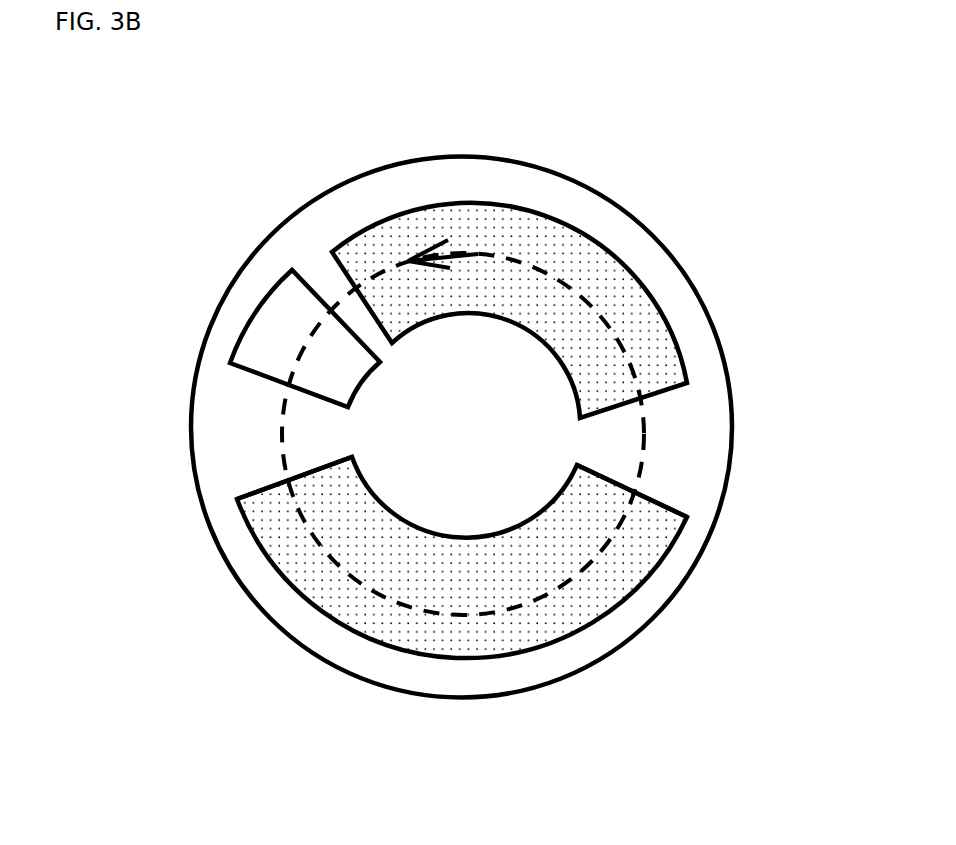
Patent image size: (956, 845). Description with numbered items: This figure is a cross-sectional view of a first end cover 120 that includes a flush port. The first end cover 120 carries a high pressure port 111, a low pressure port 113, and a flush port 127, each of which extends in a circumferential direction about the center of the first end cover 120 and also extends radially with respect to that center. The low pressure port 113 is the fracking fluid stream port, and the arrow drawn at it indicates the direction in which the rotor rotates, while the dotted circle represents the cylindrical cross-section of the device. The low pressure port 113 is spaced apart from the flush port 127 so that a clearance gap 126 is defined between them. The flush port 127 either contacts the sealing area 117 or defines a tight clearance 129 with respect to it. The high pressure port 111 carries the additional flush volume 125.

The high pressure port 111 is at (486, 625).
The low pressure port 113 is at (487, 253).
The sealing area 117 is at (310, 433).
The first end cover 120 is at (680, 447).
The additional flush volume 125 is at (635, 530).
The clearance gap 126 is at (323, 273).
The flush port 127 is at (278, 332).
The tight clearance 129 is at (267, 377).